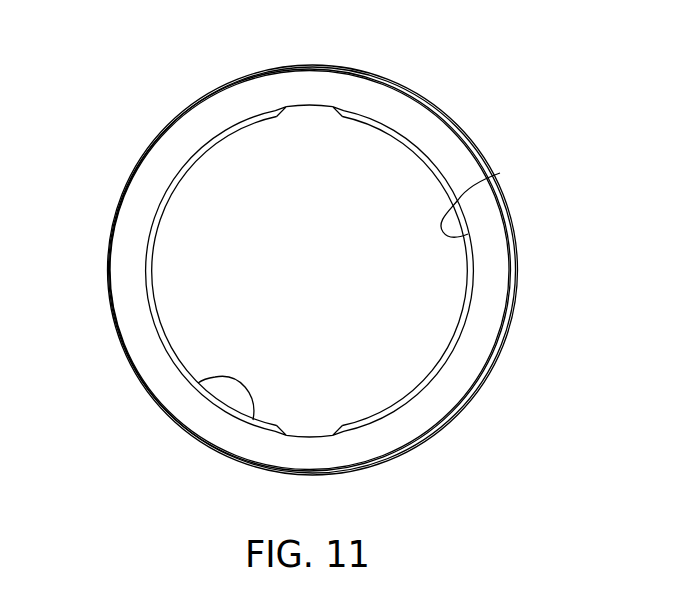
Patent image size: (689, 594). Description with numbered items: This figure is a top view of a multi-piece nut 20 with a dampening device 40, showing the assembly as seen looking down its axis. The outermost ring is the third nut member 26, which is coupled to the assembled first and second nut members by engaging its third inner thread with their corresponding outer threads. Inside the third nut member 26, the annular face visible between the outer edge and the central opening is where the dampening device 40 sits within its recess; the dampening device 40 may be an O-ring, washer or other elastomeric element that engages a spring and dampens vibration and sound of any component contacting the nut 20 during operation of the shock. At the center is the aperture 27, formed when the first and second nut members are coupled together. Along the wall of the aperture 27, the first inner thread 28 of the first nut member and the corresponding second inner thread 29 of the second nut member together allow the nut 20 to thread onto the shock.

The multi-piece nut 20 is at (500, 103).
The third nut member 26 is at (510, 328).
The aperture 27 is at (235, 292).
The first inner thread 28 is at (253, 420).
The second inner thread 29 is at (500, 173).
The dampening device 40 is at (207, 118).